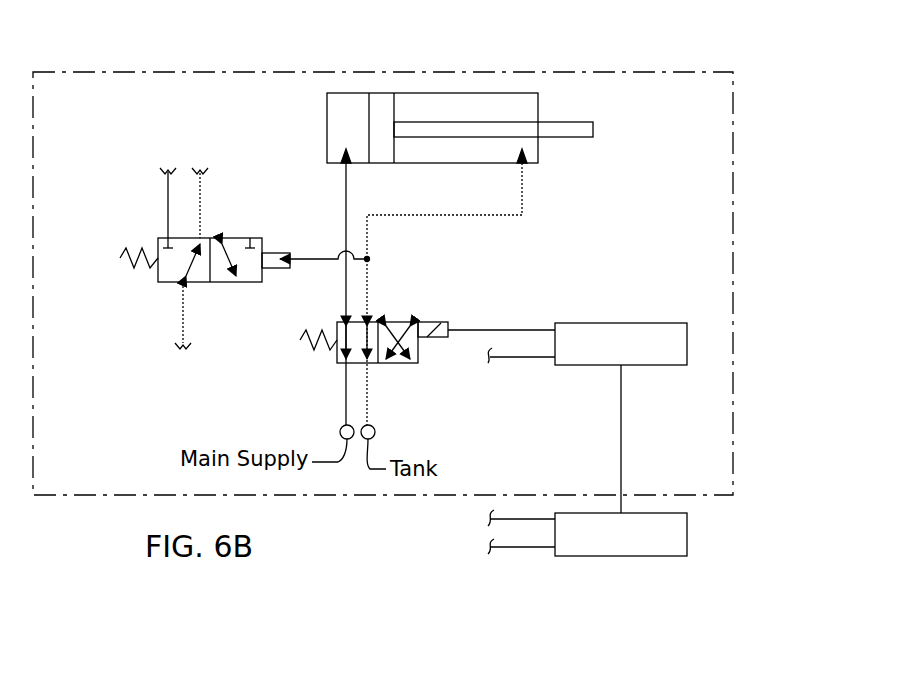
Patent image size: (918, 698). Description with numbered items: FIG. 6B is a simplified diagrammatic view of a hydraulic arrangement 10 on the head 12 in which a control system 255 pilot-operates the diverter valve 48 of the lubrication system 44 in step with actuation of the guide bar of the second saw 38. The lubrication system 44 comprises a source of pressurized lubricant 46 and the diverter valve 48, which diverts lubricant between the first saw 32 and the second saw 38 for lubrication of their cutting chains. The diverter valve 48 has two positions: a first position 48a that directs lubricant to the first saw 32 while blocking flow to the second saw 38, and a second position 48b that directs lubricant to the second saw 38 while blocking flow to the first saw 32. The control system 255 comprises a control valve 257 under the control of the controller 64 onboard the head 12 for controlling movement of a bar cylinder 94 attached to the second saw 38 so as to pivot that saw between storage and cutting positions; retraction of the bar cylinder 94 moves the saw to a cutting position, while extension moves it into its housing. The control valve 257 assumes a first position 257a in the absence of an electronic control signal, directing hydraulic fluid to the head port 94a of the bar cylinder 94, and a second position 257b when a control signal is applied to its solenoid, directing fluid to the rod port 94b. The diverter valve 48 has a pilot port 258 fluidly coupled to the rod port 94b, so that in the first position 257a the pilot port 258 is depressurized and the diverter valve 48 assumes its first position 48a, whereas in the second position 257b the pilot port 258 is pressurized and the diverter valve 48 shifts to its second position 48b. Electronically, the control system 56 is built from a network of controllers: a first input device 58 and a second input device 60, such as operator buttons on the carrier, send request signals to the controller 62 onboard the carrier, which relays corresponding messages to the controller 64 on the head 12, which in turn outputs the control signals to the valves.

The hydraulic actuation system 10 is at (757, 118).
The head 12 is at (540, 72).
The first saw 32 is at (205, 172).
The second saw 38 is at (161, 171).
The lubrication system 44 is at (80, 320).
The source of pressurized lubricant 46 is at (181, 347).
The diverter valve 48 is at (165, 290).
The first position 48a is at (160, 240).
The second position 48b is at (246, 238).
The control system 56 is at (488, 363).
The first input device 58 is at (482, 514).
The second input device 60 is at (482, 547).
The controller 62 is at (687, 536).
The controller 64 is at (650, 323).
The bar cylinder 94 is at (327, 112).
The head port 94a is at (348, 165).
The rod port 94b is at (524, 165).
The control system 255 is at (566, 265).
The control valve 257 is at (399, 308).
The first position 257a is at (340, 363).
The second position 257b is at (396, 363).
The pilot port 258 is at (275, 253).